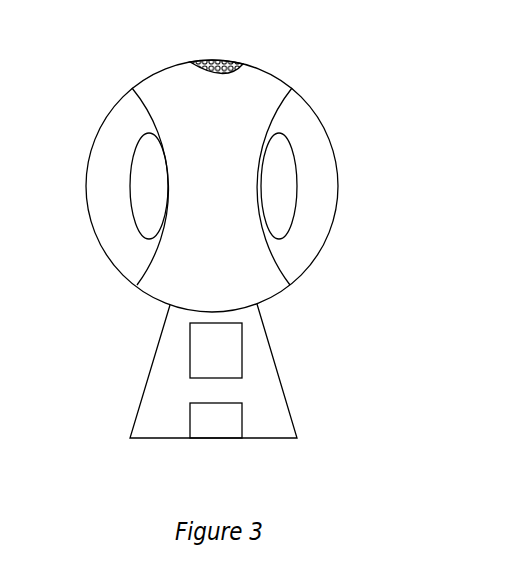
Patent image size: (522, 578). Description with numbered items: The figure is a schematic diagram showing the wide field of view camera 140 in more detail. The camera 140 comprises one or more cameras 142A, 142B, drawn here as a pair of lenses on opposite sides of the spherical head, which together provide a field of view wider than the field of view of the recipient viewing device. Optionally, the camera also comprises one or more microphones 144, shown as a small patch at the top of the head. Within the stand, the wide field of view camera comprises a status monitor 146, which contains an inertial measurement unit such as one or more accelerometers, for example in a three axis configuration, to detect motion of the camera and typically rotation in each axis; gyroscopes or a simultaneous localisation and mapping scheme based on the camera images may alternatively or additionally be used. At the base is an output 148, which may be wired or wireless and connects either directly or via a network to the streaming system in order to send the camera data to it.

The wide field of view camera 140 is at (272, 70).
The camera 142A is at (103, 122).
The camera 142B is at (327, 123).
The microphone 144 is at (192, 64).
The status monitor 146 is at (216, 350).
The output 148 is at (216, 420).